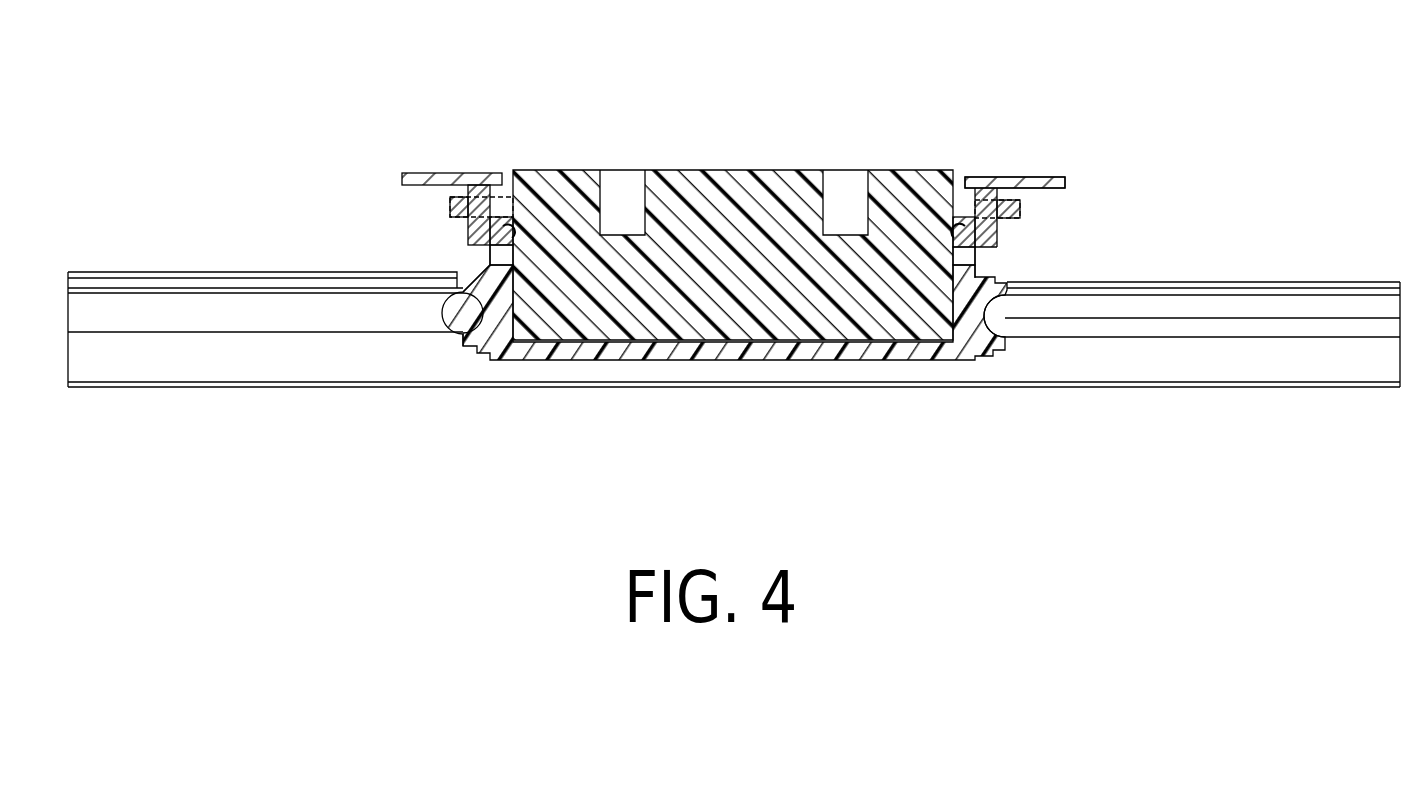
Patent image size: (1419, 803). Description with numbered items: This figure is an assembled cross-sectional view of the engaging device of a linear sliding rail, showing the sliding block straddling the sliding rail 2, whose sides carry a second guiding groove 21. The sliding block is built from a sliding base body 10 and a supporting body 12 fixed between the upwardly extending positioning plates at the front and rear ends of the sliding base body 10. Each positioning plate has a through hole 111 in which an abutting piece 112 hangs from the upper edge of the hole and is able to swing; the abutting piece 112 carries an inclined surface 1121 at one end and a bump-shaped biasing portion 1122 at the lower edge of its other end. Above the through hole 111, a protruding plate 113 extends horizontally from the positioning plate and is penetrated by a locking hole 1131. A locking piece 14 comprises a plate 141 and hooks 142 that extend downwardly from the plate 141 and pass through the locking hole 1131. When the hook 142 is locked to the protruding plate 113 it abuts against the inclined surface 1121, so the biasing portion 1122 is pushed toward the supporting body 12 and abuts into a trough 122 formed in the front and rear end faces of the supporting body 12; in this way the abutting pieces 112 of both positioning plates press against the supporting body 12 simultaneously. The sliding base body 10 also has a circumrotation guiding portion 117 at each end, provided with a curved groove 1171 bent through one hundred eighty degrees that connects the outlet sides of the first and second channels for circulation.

The sliding rail 2 is at (149, 262).
The second guiding groove 21 is at (222, 318).
The sliding base body 10 is at (994, 374).
The supporting body 12 is at (684, 158).
The through hole 111 is at (490, 255).
The abutting piece 112 is at (953, 212).
The inclined surface 1121 is at (467, 202).
The biasing portion 1122 is at (503, 232).
The protruding plate 113 is at (1017, 210).
The locking hole 1131 is at (992, 177).
The circumrotation guiding portion 117 is at (478, 262).
The curved groove 1171 is at (466, 320).
The trough 122 is at (953, 230).
The locking piece 14 is at (1080, 150).
The plate 141 is at (1027, 178).
The hook 142 is at (990, 232).